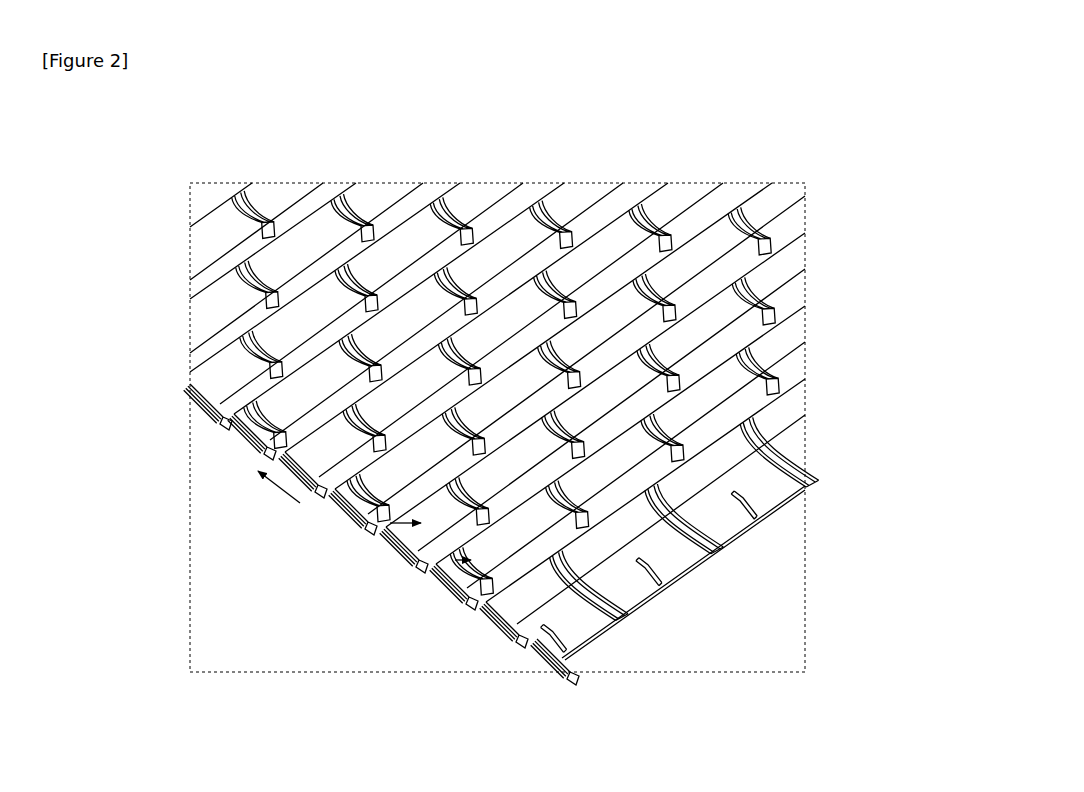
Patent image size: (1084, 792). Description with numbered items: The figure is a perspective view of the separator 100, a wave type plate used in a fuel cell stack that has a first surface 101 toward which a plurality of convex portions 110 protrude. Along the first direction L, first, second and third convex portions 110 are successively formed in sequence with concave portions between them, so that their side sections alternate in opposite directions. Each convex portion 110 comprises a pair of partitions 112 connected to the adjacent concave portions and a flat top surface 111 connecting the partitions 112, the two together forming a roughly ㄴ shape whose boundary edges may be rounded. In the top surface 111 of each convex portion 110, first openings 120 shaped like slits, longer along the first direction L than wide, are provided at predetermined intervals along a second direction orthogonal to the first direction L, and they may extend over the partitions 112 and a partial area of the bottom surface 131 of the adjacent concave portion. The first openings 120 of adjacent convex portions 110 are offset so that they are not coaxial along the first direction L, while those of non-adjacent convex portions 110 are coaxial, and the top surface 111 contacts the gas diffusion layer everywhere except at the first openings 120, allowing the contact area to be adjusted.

The separator 100 is at (231, 142).
The convex portion 110 is at (498, 742).
The top surface 111 is at (380, 568).
The partition 112 is at (357, 518).
The first opening 120 is at (463, 487).
The bottom surface 131 is at (365, 560).
The first surface 101 is at (684, 567).
The first direction L is at (283, 491).